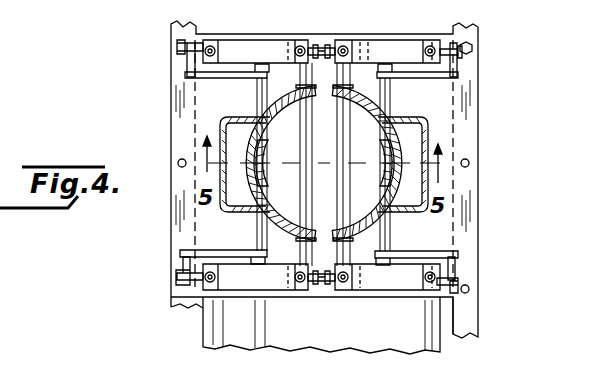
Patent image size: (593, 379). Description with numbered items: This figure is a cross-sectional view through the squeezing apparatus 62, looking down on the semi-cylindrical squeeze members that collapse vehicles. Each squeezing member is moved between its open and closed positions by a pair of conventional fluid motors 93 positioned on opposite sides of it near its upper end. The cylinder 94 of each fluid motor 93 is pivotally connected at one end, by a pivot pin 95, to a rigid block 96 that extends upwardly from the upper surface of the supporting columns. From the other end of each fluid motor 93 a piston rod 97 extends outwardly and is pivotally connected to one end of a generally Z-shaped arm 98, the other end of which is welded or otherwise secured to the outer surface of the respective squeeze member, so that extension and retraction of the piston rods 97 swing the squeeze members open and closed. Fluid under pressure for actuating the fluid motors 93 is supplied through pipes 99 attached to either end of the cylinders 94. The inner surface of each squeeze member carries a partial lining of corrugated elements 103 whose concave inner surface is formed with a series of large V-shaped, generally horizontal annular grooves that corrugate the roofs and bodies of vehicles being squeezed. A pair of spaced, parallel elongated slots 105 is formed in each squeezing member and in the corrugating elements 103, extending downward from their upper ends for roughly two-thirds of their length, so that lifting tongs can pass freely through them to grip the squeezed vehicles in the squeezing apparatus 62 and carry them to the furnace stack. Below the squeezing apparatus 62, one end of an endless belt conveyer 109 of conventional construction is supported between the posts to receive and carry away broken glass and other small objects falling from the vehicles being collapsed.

The squeezing apparatus 62 is at (478, 128).
The fluid motor 93 is at (374, 52).
The cylinder 94 is at (285, 48).
The pivot pin 95 is at (327, 46).
The rigid block 96 is at (326, 290).
The piston rod 97 is at (186, 70).
The Z-shaped arm 98 is at (411, 76).
The pipes 99 is at (431, 45).
The corrugated elements 103 is at (388, 107).
The elongated slots 105 is at (252, 117).
The endless belt conveyer 109 is at (317, 324).